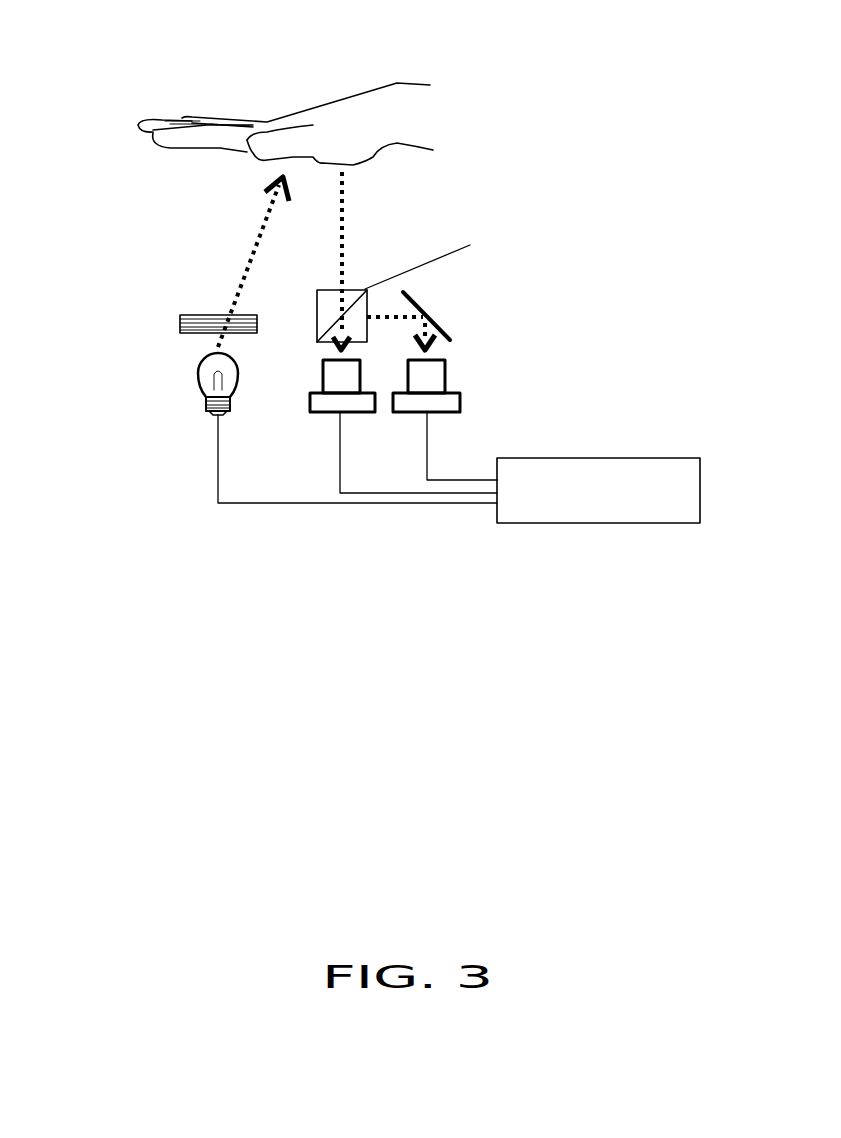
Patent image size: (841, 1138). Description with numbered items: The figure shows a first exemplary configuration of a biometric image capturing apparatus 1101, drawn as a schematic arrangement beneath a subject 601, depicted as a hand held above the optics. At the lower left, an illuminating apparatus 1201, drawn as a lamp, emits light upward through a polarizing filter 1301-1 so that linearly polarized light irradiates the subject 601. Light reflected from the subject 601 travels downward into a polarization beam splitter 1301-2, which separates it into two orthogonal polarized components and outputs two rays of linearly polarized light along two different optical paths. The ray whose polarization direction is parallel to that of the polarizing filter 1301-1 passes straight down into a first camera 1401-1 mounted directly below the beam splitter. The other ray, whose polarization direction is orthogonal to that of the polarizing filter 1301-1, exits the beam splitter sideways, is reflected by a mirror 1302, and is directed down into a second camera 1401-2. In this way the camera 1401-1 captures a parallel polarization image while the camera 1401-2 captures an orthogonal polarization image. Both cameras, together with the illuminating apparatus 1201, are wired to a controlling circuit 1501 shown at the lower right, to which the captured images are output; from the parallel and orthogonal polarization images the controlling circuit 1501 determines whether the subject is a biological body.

The subject 601 is at (417, 95).
The biometric image capturing apparatus 1101 is at (680, 358).
The illuminating apparatus 1201 is at (207, 413).
The polarizing filter 1301-1 is at (207, 313).
The polarization beam splitter 1301-2 is at (317, 330).
The mirror 1302 is at (404, 292).
The camera 1401-1 is at (325, 413).
The camera 1401-2 is at (440, 412).
The controlling circuit 1501 is at (655, 458).